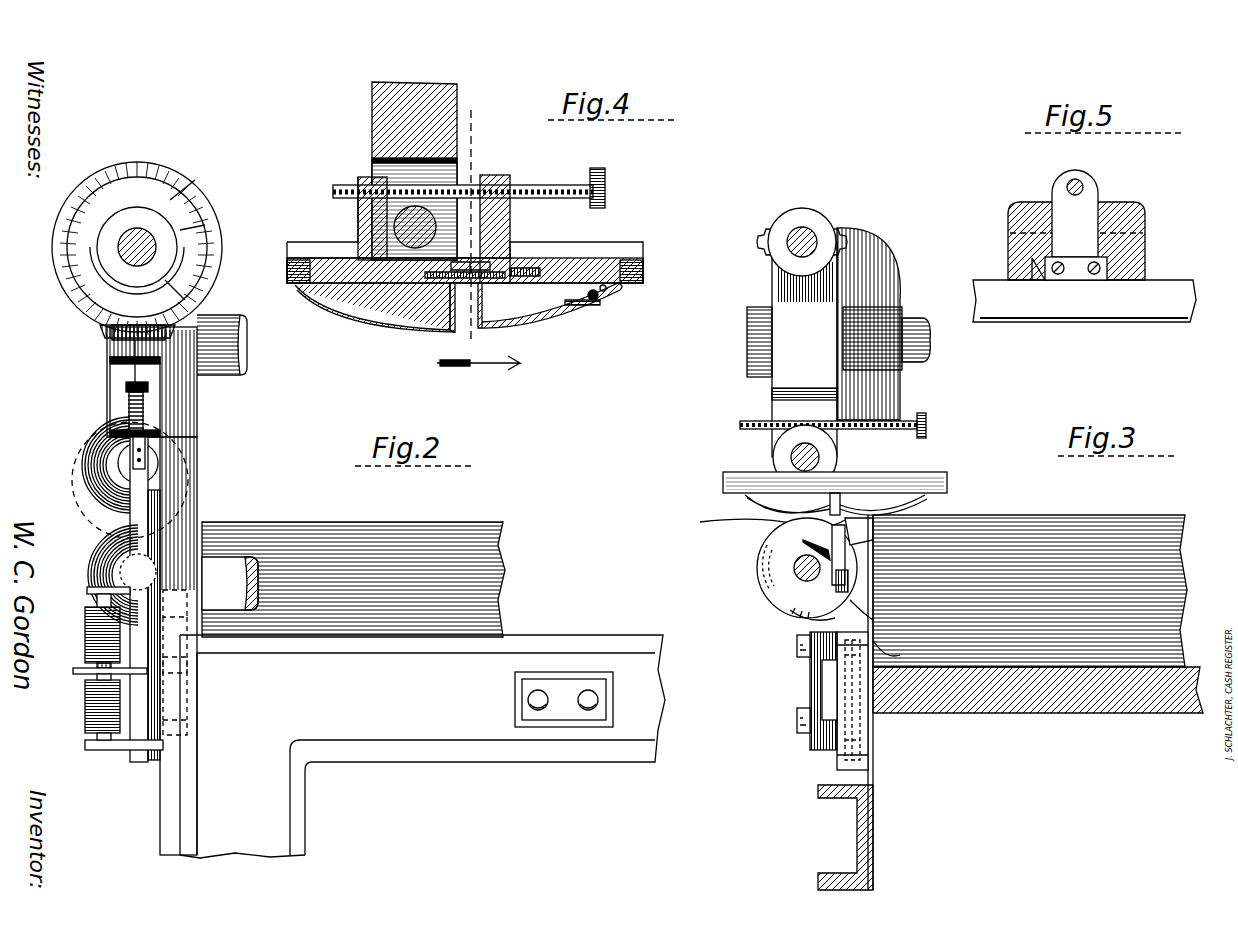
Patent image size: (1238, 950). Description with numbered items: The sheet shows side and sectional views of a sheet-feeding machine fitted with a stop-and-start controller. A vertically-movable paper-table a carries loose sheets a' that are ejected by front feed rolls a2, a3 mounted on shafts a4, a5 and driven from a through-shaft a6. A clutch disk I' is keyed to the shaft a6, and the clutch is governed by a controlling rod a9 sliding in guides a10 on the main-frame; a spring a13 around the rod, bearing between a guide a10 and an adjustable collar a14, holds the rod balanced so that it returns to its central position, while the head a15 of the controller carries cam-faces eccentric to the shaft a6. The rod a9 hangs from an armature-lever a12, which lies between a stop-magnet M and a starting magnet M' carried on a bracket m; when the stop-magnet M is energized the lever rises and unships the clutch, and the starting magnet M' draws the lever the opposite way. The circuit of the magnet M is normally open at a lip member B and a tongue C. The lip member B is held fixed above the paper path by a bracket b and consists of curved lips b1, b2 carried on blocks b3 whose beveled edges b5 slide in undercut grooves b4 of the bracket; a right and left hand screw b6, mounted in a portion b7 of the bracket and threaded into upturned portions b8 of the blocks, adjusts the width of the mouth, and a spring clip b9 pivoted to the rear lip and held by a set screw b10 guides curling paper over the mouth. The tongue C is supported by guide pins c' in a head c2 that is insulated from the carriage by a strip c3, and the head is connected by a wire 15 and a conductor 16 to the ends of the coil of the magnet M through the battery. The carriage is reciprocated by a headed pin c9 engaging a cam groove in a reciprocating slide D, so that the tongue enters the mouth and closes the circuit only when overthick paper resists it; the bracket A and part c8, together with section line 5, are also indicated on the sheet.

In FIG. 2, the disk I' is at (137, 229).
In FIG. 2, the through-shaft a6 is at (135, 250).
In FIG. 3, the through-shaft a6 is at (785, 242).
In FIG. 2, the head of the controller a15 is at (112, 332).
In FIG. 2, the guide a10 is at (112, 360).
In FIG. 2, the adjustable collar a14 is at (126, 388).
In FIG. 2, the spring a13 is at (128, 418).
In FIG. 2, the front feed roll a2 is at (90, 462).
In FIG. 3, the front feed roll a2 is at (772, 452).
In FIG. 2, the controlling rod a9 is at (150, 463).
In FIG. 2, the front feed roll a3 is at (94, 563).
In FIG. 3, the front feed roll a3 is at (760, 569).
In FIG. 2, the shaft a5 is at (132, 575).
In FIG. 3, the shaft a5 is at (800, 574).
In FIG. 2, the bracket m is at (95, 596).
In FIG. 2, the electromagnet M is at (81, 631).
In FIG. 2, the lever a12 is at (75, 672).
In FIG. 2, the starting magnet M' is at (80, 707).
In FIG. 2, the sheets a' is at (353, 563).
In FIG. 3, the sheets a' is at (1030, 577).
In FIG. 2, the bracket A is at (465, 745).
In FIG. 3, the bracket A is at (875, 812).
In FIG. 3, the paper-table a is at (1038, 708).
In FIG. 4, the shaft a4 is at (412, 240).
In FIG. 3, the shaft a4 is at (792, 460).
In FIG. 4, the bracket b is at (375, 110).
In FIG. 3, the bracket b is at (838, 342).
In FIG. 4, the lip b1 is at (445, 325).
In FIG. 4, the lip b2 is at (535, 290).
In FIG. 5, the lip b2 is at (1084, 301).
In FIG. 4, the block b3 is at (333, 258).
In FIG. 4, the undercut groove b4 is at (298, 285).
In FIG. 5, the undercut groove b4 is at (1030, 263).
In FIG. 5, the beveled edge b5 is at (1120, 257).
In FIG. 4, the right and left hand screw b6 is at (540, 185).
In FIG. 5, the right and left hand screw b6 is at (1080, 183).
In FIG. 3, the right and left hand screw b6 is at (905, 422).
In FIG. 4, the portion of the bracket b7 is at (597, 168).
In FIG. 3, the portion of the bracket b7 is at (926, 428).
In FIG. 4, the upturned portion b8 is at (368, 178).
In FIG. 5, the upturned portion b8 is at (1082, 198).
In FIG. 4, the clip b9 is at (550, 325).
In FIG. 3, the clip b9 is at (930, 497).
In FIG. 4, the set screw b10 is at (588, 294).
In FIG. 4, the lip member B is at (615, 240).
In FIG. 3, the lip member B is at (745, 497).
In FIG. 3, the tongue C is at (700, 522).
In FIG. 3, the guide pin c' is at (913, 510).
In FIG. 3, the head c2 is at (850, 580).
In FIG. 3, the strip of insulating material c3 is at (897, 653).
In FIG. 3, the pawl c8 is at (800, 544).
In FIG. 3, the headed pin c9 is at (822, 745).
In FIG. 3, the reciprocating slide D is at (825, 692).
In FIG. 3, the wire 15 is at (875, 615).
In FIG. 3, the conductor 16 is at (790, 610).
In FIG. 4, the section line 5 is at (478, 238).